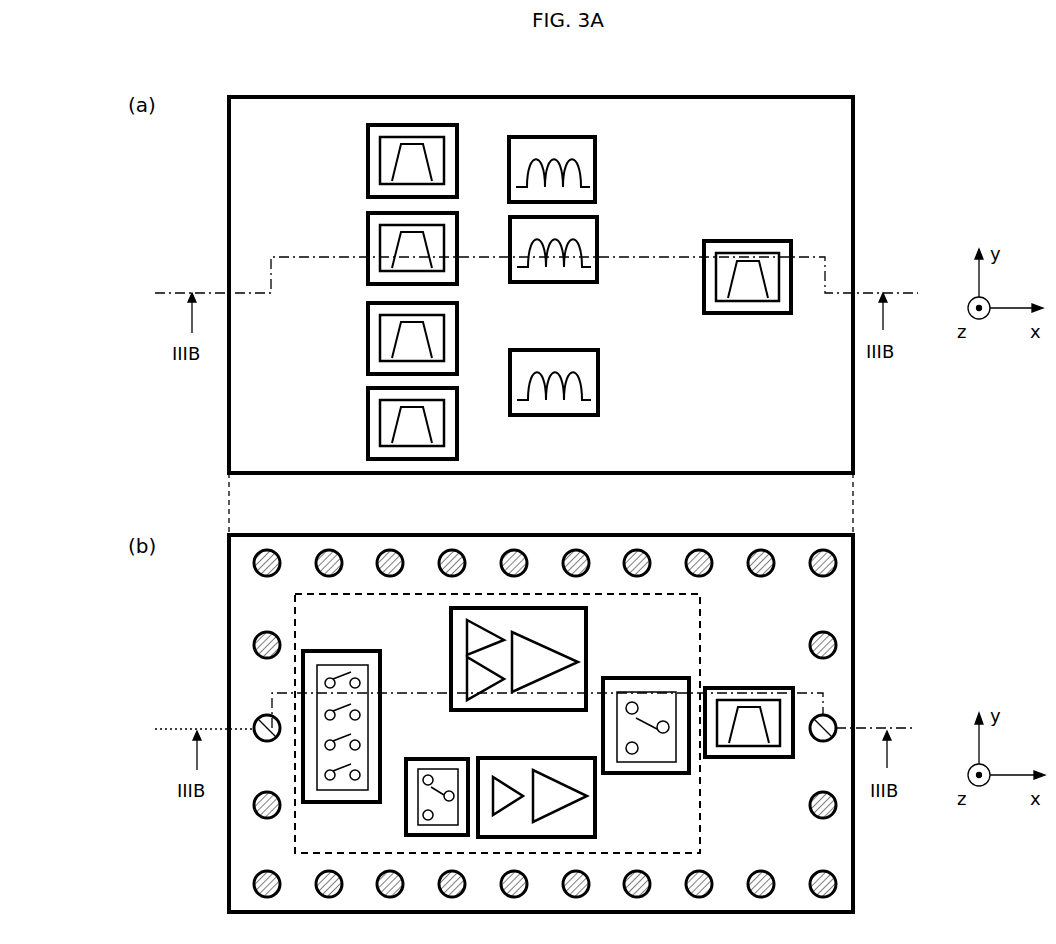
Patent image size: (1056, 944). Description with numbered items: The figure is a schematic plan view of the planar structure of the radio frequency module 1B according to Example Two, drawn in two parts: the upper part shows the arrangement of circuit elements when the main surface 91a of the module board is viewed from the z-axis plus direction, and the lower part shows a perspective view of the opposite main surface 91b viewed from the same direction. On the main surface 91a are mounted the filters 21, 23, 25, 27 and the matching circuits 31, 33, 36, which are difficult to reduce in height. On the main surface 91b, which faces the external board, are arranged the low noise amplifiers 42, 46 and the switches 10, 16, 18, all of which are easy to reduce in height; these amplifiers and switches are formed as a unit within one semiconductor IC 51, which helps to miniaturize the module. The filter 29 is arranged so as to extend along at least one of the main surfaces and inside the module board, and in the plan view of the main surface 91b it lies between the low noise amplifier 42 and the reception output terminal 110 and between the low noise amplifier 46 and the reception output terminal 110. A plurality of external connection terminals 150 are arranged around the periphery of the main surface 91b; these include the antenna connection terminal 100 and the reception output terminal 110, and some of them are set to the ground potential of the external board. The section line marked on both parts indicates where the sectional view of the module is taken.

The radio frequency module 1B is at (953, 114).
The main surface 91a is at (846, 148).
The main surface 91b is at (847, 583).
The filter 21 is at (458, 153).
The filter 23 is at (458, 243).
The filter 25 is at (458, 335).
The filter 27 is at (458, 423).
The filter 29 is at (752, 241).
The matching circuit 31 is at (597, 165).
The matching circuit 33 is at (598, 238).
The matching circuit 36 is at (600, 375).
The semiconductor IC 51 is at (312, 625).
The switch 10 is at (338, 651).
The switch 16 is at (406, 812).
The switch 18 is at (644, 678).
The low noise amplifier 42 is at (587, 641).
The low noise amplifier 46 is at (596, 806).
The antenna connection terminal 100 is at (256, 719).
The reception output terminal 110 is at (838, 718).
The external connection terminals 150 is at (253, 814).